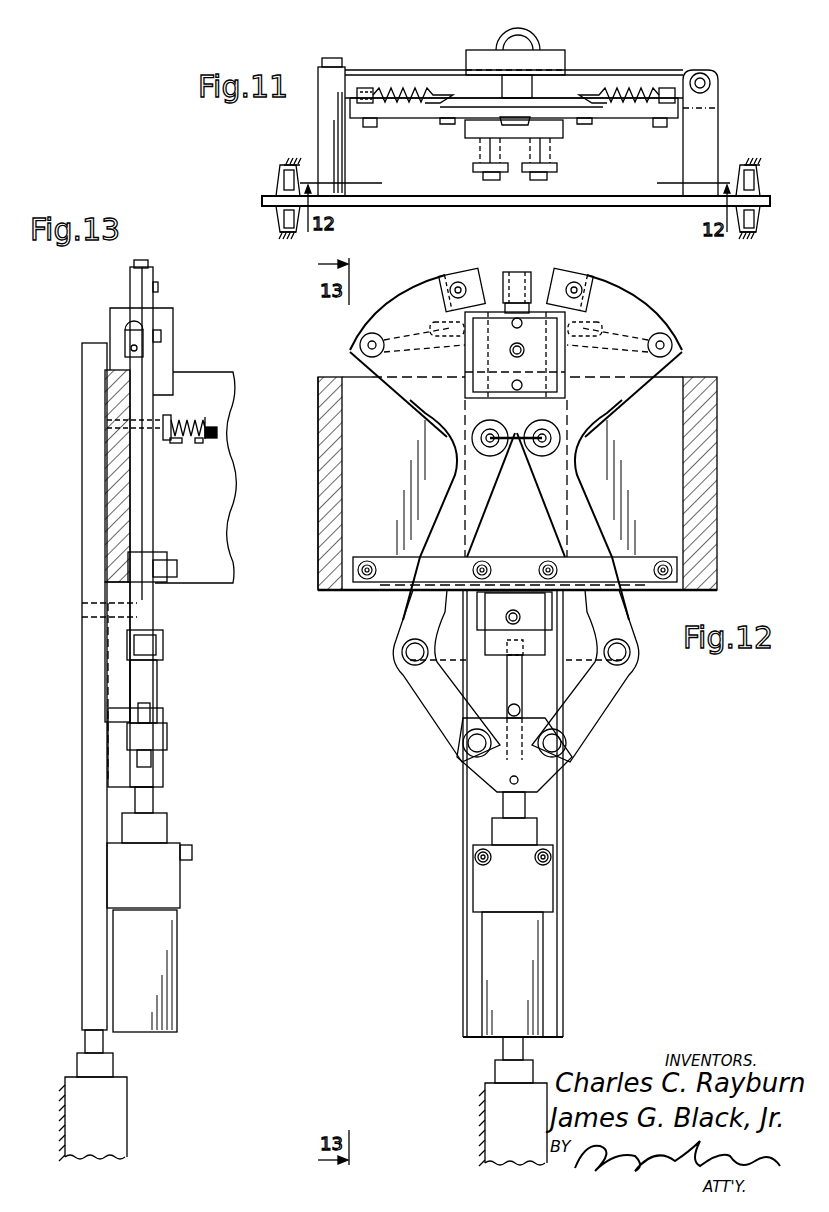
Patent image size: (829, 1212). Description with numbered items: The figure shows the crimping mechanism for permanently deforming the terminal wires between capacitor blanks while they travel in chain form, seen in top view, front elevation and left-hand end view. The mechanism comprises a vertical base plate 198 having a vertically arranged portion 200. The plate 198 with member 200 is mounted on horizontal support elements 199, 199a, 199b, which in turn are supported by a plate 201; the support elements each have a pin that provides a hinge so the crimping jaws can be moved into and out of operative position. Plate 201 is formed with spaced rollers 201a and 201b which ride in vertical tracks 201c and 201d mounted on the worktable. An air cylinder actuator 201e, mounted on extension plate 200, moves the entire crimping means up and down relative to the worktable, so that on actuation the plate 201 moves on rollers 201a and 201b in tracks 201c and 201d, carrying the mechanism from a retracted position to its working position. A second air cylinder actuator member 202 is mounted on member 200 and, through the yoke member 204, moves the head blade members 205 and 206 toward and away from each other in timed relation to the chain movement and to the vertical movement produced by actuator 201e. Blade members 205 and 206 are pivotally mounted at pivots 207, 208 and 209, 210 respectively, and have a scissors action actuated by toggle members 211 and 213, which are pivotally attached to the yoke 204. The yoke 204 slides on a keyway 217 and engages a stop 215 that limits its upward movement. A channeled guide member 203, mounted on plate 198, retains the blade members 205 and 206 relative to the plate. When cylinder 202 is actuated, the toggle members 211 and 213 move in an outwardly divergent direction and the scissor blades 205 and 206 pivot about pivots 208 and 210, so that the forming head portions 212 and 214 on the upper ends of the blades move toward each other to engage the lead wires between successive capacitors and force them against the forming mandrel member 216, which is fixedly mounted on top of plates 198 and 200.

In FIG. 11, the vertical base plate 198 is at (637, 80).
In FIG. 12, the vertical base plate 198 is at (358, 507).
In FIG. 13, the vertical base plate 198 is at (110, 508).
In FIG. 11, the horizontal support element 199 is at (332, 145).
In FIG. 11, the horizontal support element 199a is at (708, 135).
In FIG. 12, the horizontal support element 199a is at (330, 478).
In FIG. 12, the horizontal support element 199b is at (707, 473).
In FIG. 13, the horizontal support element 199b is at (220, 372).
In FIG. 11, the vertically arranged portion 200 is at (466, 53).
In FIG. 12, the vertically arranged portion 200 is at (473, 810).
In FIG. 13, the vertically arranged portion 200 is at (95, 833).
In FIG. 11, the plate 201 is at (613, 203).
In FIG. 11, the roller 201a is at (752, 222).
In FIG. 11, the roller 201b is at (280, 182).
In FIG. 11, the vertical track 201c is at (735, 178).
In FIG. 11, the vertical track 201d is at (282, 165).
In FIG. 11, the air cylinder actuator 201e is at (540, 40).
In FIG. 12, the air cylinder actuator 201e is at (498, 1098).
In FIG. 13, the air cylinder actuator 201e is at (118, 1117).
In FIG. 12, the second air cylinder actuator member 202 is at (530, 947).
In FIG. 13, the second air cylinder actuator member 202 is at (160, 950).
In FIG. 12, the channeled guide member 203 is at (403, 577).
In FIG. 13, the channeled guide member 203 is at (163, 582).
In FIG. 12, the yoke member 204 is at (537, 778).
In FIG. 13, the yoke member 204 is at (152, 775).
In FIG. 12, the head blade member 205 is at (420, 386).
In FIG. 13, the head blade member 205 is at (147, 502).
In FIG. 12, the head blade member 206 is at (616, 387).
In FIG. 12, the pivot 207 is at (404, 657).
In FIG. 13, the pivot 207 is at (163, 647).
In FIG. 11, the pivot 208 is at (478, 177).
In FIG. 12, the pivot 208 is at (483, 453).
In FIG. 13, the pivot 208 is at (220, 432).
In FIG. 12, the pivot 209 is at (628, 657).
In FIG. 11, the pivot 210 is at (555, 180).
In FIG. 12, the pivot 210 is at (555, 452).
In FIG. 12, the toggle member 211 is at (430, 703).
In FIG. 13, the toggle member 211 is at (145, 690).
In FIG. 11, the forming head portion 212 is at (458, 117).
In FIG. 12, the forming head portion 212 is at (473, 268).
In FIG. 13, the forming head portion 212 is at (145, 265).
In FIG. 12, the toggle member 213 is at (587, 707).
In FIG. 11, the forming head portion 214 is at (575, 120).
In FIG. 12, the forming head portion 214 is at (553, 272).
In FIG. 12, the stop 215 is at (525, 656).
In FIG. 12, the forming mandrel member 216 is at (517, 272).
In FIG. 12, the keyway 217 is at (507, 683).
In FIG. 13, the keyway 217 is at (112, 675).